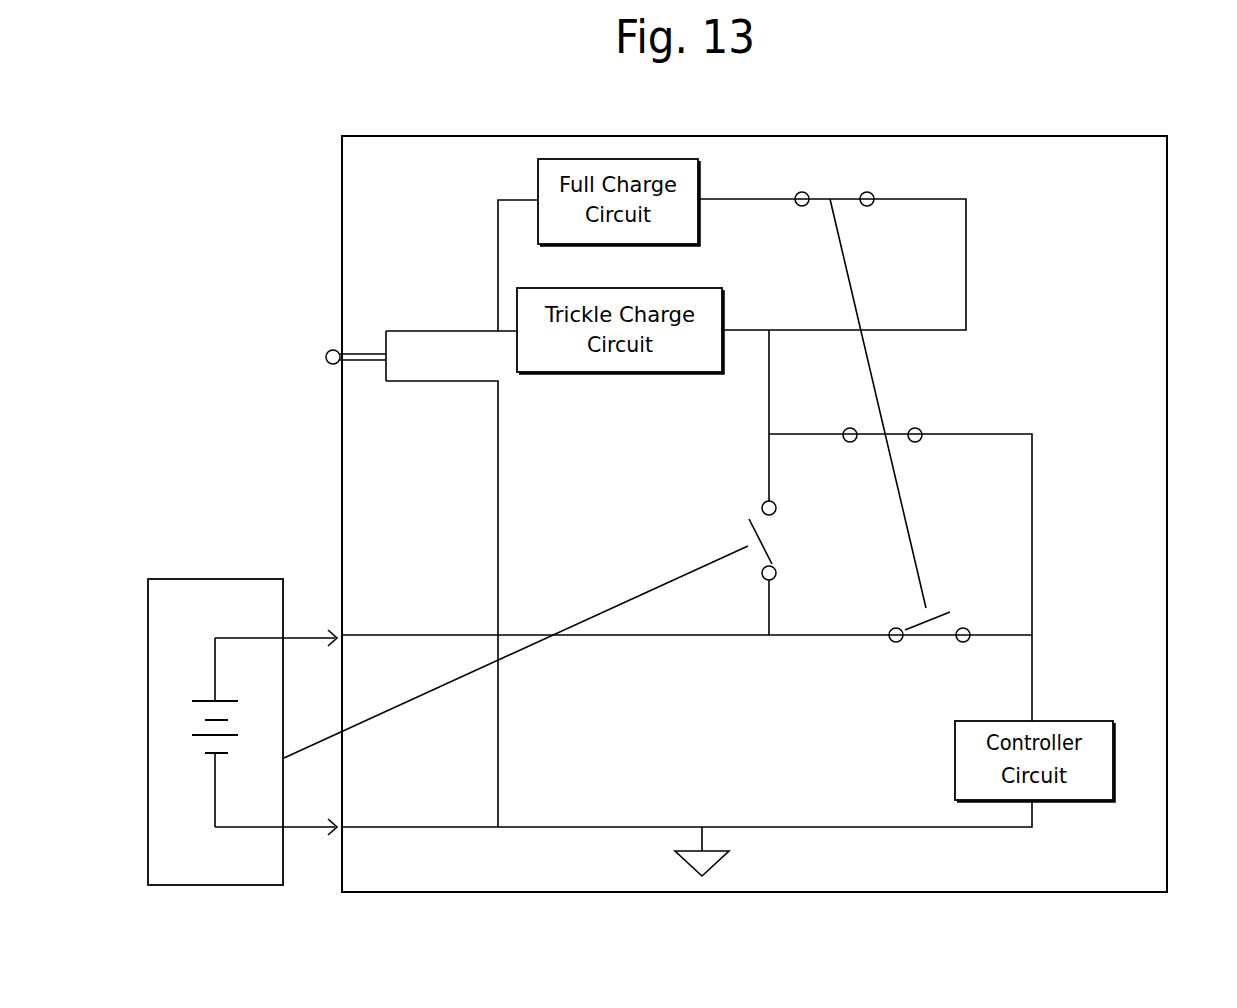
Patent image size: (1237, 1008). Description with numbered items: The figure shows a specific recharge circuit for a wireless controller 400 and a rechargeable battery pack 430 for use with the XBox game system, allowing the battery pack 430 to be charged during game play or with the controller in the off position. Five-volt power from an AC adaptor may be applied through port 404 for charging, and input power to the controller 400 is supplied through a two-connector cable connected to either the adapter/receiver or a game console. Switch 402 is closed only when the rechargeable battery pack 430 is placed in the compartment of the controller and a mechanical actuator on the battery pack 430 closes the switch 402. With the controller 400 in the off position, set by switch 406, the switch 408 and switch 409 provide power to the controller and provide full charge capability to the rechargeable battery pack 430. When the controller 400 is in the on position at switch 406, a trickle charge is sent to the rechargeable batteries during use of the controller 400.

The wireless controller 400 is at (365, 190).
The switch 402 is at (748, 532).
The port 404 is at (328, 356).
The switch 406 is at (940, 616).
The switch 408 is at (865, 430).
The switch 409 is at (820, 196).
The rechargeable battery pack 430 is at (185, 598).